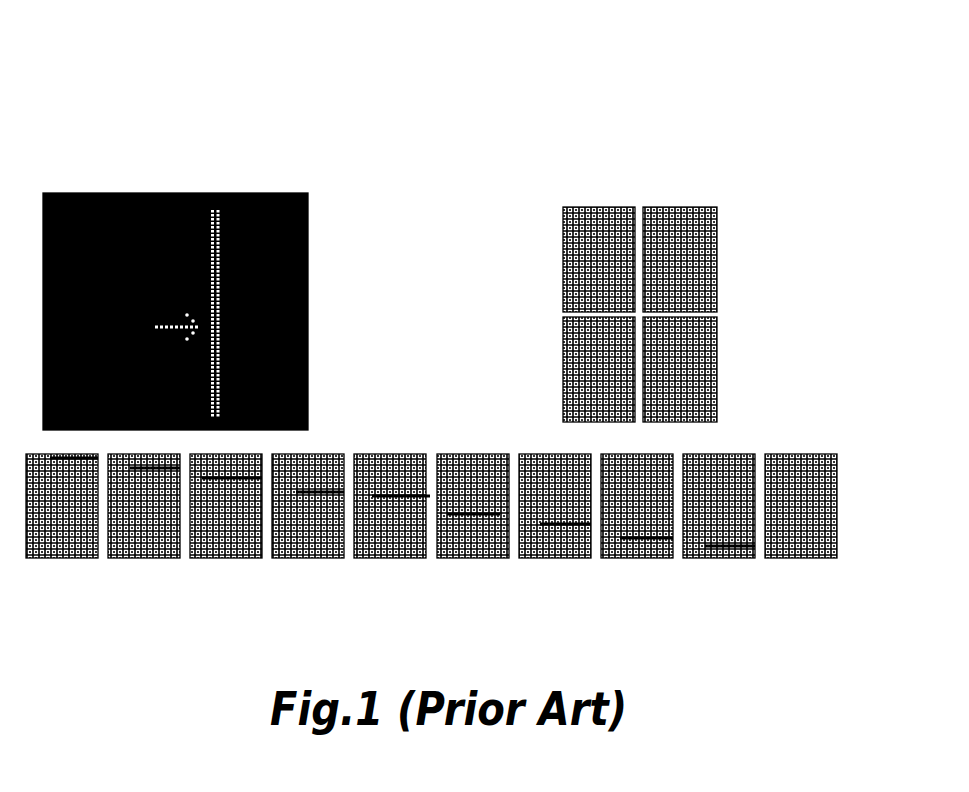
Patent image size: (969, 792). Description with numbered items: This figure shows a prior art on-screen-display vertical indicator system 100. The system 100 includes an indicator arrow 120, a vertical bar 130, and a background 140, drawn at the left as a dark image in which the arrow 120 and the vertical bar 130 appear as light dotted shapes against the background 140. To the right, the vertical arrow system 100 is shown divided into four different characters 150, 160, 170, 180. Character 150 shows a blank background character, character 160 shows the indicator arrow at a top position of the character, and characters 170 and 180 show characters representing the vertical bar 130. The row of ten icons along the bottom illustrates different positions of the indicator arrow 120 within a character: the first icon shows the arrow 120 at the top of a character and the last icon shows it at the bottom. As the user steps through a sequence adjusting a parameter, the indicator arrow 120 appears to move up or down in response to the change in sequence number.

The vertical indicator system 100 is at (669, 98).
The indicator arrow 120 is at (160, 327).
The vertical bar 130 is at (217, 268).
The background 140 is at (136, 193).
The character 150 is at (563, 252).
The character 160 is at (563, 367).
The character 170 is at (717, 252).
The character 180 is at (717, 367).